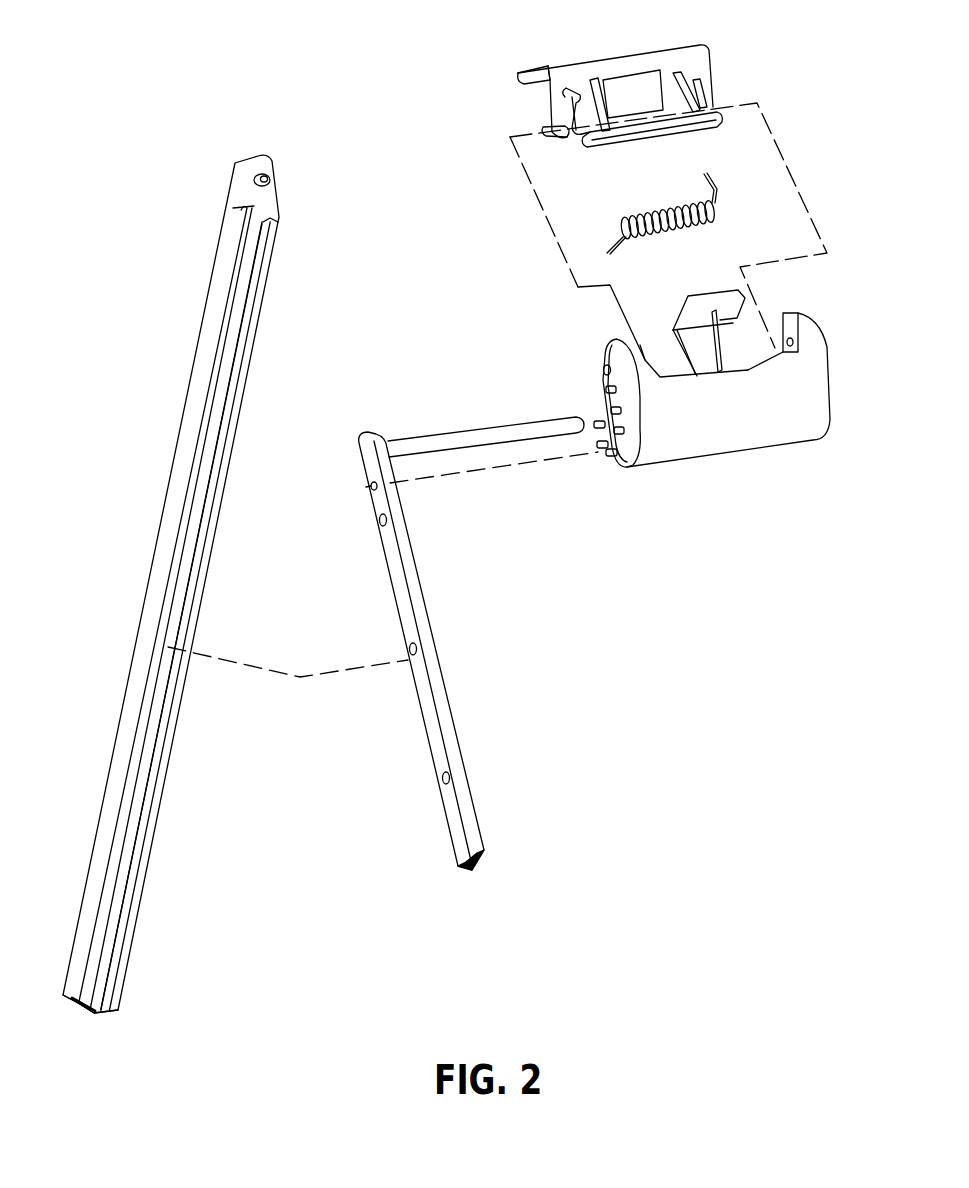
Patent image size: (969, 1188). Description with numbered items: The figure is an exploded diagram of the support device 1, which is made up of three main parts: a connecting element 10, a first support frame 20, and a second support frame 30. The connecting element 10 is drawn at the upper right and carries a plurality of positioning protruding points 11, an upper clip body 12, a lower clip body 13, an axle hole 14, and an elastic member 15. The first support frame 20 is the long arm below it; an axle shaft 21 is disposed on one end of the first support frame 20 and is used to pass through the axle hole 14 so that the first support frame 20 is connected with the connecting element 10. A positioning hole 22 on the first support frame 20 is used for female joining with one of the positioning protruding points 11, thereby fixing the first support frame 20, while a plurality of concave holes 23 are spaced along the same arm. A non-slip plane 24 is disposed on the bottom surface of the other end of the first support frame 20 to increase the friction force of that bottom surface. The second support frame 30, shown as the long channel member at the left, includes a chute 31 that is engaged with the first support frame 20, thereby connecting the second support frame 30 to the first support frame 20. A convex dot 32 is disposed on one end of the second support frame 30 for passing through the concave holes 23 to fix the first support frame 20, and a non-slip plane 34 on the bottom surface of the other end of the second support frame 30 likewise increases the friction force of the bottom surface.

The support device 1 is at (306, 80).
The connecting element 10 is at (510, 404).
The positioning protruding points 11 is at (608, 370).
The upper clip body 12 is at (520, 76).
The lower clip body 13 is at (606, 348).
The axle hole 14 is at (606, 427).
The elastic member 15 is at (607, 240).
The first support frame 20 is at (383, 659).
The axle shaft 21 is at (442, 440).
The positioning hole 22 is at (370, 486).
The concave holes 23 is at (379, 519).
The non-slip plane 24 is at (473, 869).
The second support frame 30 is at (208, 621).
The chute 31 is at (264, 228).
The convex dot 32 is at (271, 179).
The non-slip plane 34 is at (80, 1013).